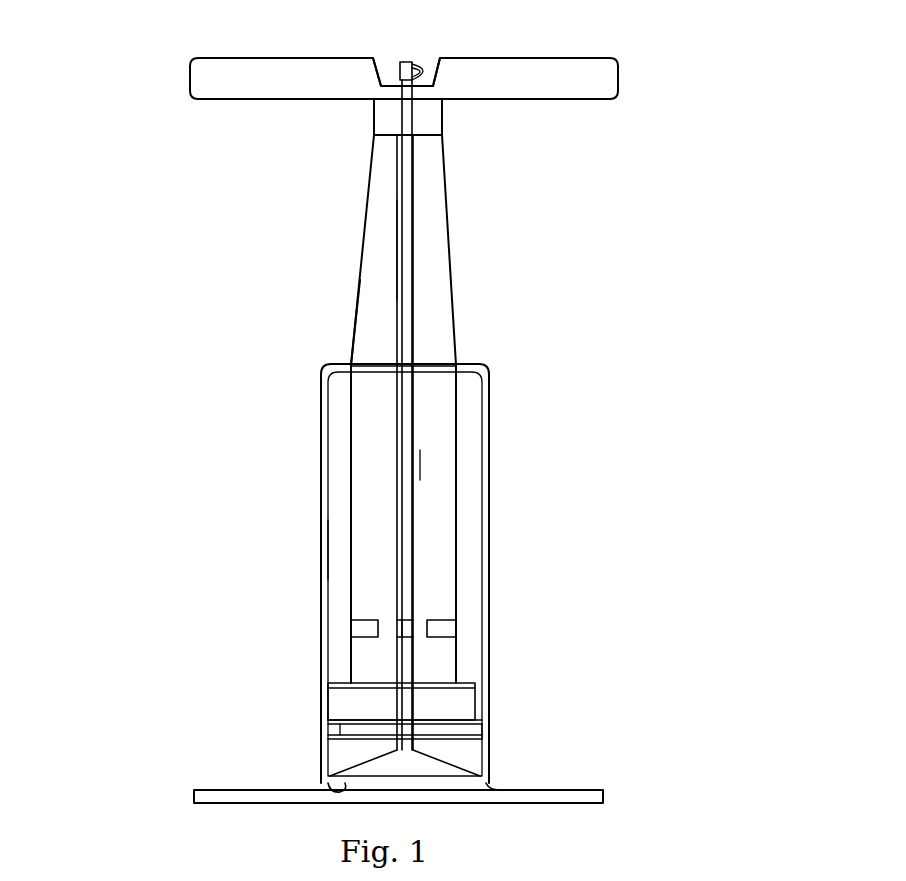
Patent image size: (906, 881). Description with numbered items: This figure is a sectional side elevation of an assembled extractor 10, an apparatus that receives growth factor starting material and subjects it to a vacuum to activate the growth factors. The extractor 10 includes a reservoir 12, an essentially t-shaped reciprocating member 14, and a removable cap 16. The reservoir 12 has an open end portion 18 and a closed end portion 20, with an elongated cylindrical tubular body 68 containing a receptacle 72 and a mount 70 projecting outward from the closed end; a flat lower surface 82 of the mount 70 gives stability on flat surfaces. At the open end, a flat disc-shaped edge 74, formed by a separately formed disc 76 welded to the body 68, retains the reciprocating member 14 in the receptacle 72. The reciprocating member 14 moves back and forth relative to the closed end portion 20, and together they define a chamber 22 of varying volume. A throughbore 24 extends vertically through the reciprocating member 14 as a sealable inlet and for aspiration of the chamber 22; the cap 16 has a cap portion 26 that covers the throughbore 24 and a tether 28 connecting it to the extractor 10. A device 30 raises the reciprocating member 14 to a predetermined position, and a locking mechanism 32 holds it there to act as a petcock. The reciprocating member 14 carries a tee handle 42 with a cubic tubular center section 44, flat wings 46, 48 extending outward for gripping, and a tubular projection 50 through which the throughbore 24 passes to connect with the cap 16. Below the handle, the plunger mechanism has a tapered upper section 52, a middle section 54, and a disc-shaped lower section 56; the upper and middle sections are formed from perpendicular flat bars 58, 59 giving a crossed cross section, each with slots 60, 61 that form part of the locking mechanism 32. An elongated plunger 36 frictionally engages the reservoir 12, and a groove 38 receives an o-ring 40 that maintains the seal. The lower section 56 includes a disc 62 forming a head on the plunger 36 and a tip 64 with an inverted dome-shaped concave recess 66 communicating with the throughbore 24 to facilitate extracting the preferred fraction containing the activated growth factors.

The extractor 10 is at (152, 58).
The reservoir 12 is at (320, 570).
The reciprocating member 14 is at (482, 185).
The cap 16 is at (418, 72).
The open end portion 18 is at (458, 362).
The closed end portion 20 is at (490, 745).
The chamber 22 is at (336, 506).
The throughbore 24 is at (398, 175).
The cap portion 26 is at (404, 62).
The tether 28 is at (428, 78).
The device 30 is at (267, 121).
The locking mechanism 32 is at (415, 621).
The plunger 36 is at (438, 468).
The groove 38 is at (345, 725).
The o-ring 40 is at (355, 730).
The handle 42 is at (538, 58).
The center section 44 is at (445, 115).
The wing 46 is at (248, 70).
The wing 48 is at (615, 92).
The tubular projection 50 is at (378, 80).
The upper section 52 is at (432, 243).
The middle section 54 is at (438, 528).
The lower section 56 is at (468, 708).
The bar 58 is at (362, 323).
The bar 59 is at (398, 275).
The slot 60 is at (358, 635).
The slot 61 is at (413, 627).
The disc 62 is at (362, 738).
The tip 64 is at (488, 775).
The recess 66 is at (322, 783).
The body 68 is at (322, 450).
The mount 70 is at (505, 803).
The receptacle 72 is at (337, 550).
The edge 74 is at (350, 365).
The disc 76 is at (365, 375).
The lower surface 82 is at (300, 803).